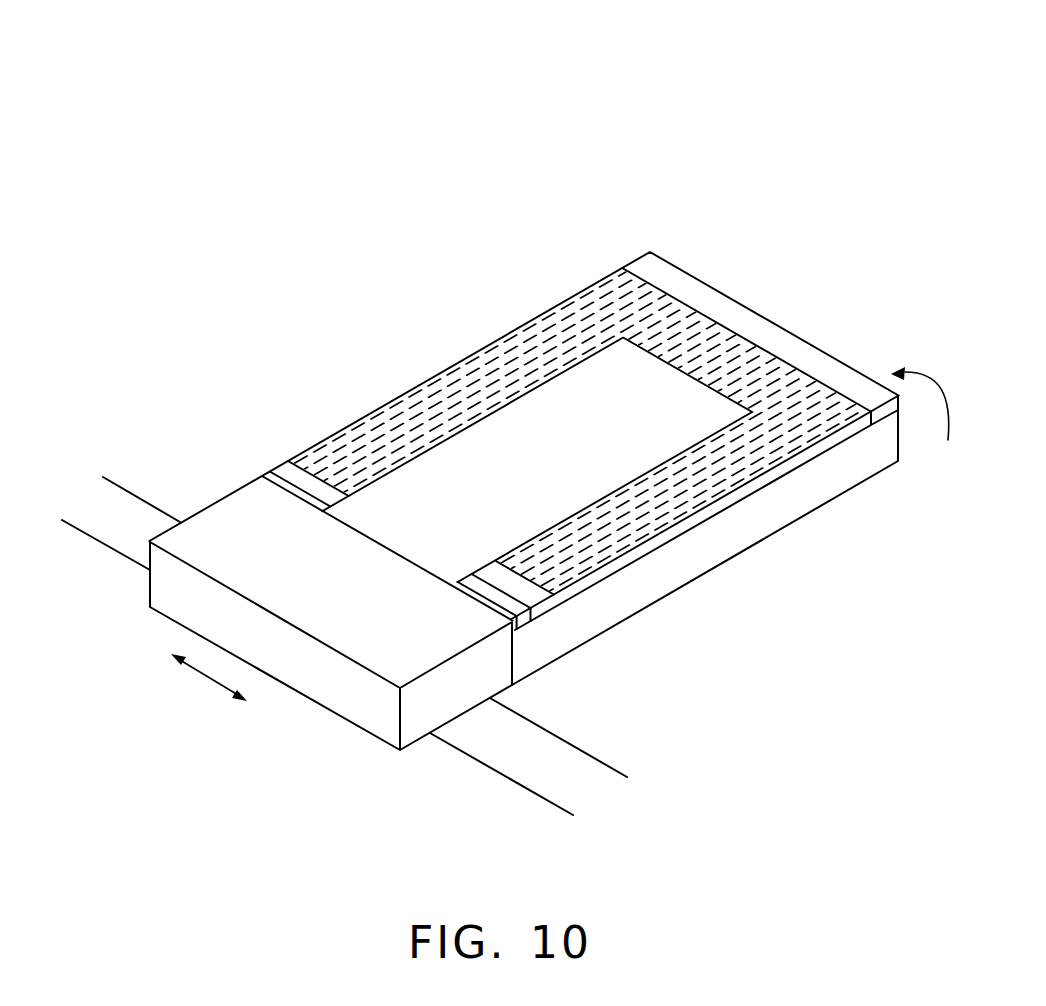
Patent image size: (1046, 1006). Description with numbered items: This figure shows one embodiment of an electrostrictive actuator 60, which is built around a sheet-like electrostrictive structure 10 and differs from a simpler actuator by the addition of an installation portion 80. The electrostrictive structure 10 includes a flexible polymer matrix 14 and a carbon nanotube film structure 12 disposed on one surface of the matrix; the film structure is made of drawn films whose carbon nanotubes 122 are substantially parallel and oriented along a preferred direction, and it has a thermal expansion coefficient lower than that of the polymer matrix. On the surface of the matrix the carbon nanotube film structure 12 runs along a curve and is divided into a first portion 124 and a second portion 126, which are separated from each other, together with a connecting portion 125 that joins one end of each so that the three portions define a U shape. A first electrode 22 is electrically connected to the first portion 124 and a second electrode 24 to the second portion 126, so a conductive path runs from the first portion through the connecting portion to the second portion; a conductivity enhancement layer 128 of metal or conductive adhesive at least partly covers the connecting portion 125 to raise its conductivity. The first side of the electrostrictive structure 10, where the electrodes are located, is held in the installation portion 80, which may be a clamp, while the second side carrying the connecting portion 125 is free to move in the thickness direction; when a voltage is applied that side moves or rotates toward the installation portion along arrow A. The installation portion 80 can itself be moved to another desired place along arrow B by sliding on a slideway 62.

The electrostrictive actuator 60 is at (529, 42).
The electrostrictive structure 10 is at (907, 502).
The carbon nanotube film structure 12 is at (797, 465).
The flexible polymer matrix 14 is at (773, 515).
The first electrode 22 is at (283, 472).
The second electrode 24 is at (517, 605).
The slideway 62 is at (590, 755).
The installation portion 80 is at (360, 693).
The carbon nanotubes 122 is at (613, 277).
The first portion 124 is at (398, 418).
The connecting portion 125 is at (742, 363).
The second portion 126 is at (610, 543).
The conductivity enhancement layer 128 is at (823, 372).